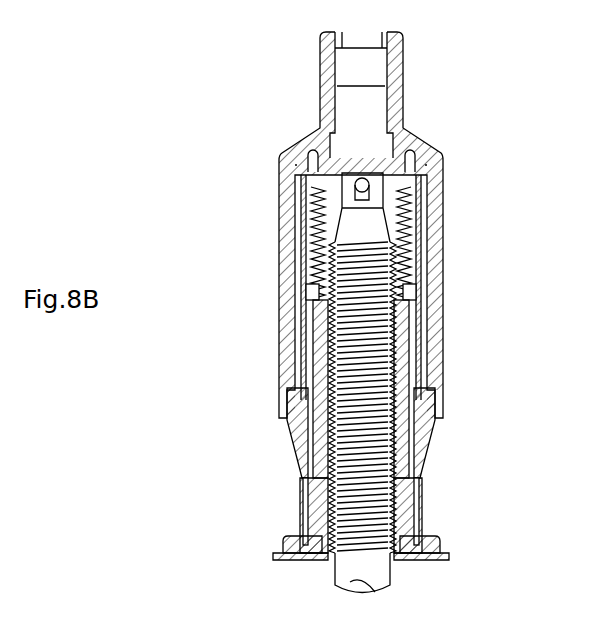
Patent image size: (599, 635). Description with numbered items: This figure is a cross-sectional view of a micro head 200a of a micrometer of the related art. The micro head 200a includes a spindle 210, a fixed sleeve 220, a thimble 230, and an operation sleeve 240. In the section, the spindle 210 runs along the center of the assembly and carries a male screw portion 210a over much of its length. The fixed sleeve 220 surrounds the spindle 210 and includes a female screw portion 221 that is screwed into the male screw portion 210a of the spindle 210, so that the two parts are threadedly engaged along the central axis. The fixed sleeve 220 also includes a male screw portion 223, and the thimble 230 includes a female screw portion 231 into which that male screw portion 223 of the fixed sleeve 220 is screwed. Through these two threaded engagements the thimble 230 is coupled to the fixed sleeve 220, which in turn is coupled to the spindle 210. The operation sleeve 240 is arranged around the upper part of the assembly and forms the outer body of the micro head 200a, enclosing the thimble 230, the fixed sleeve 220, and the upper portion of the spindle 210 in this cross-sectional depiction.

The micro head 200a is at (455, 131).
The operation sleeve 240 is at (443, 187).
The male screw portion 223 is at (310, 232).
The female screw portion 231 is at (312, 288).
The female screw portion 221 is at (328, 378).
The thimble 230 is at (295, 432).
The fixed sleeve 220 is at (300, 483).
The spindle 210 is at (365, 567).
The male screw portion 210a is at (372, 487).